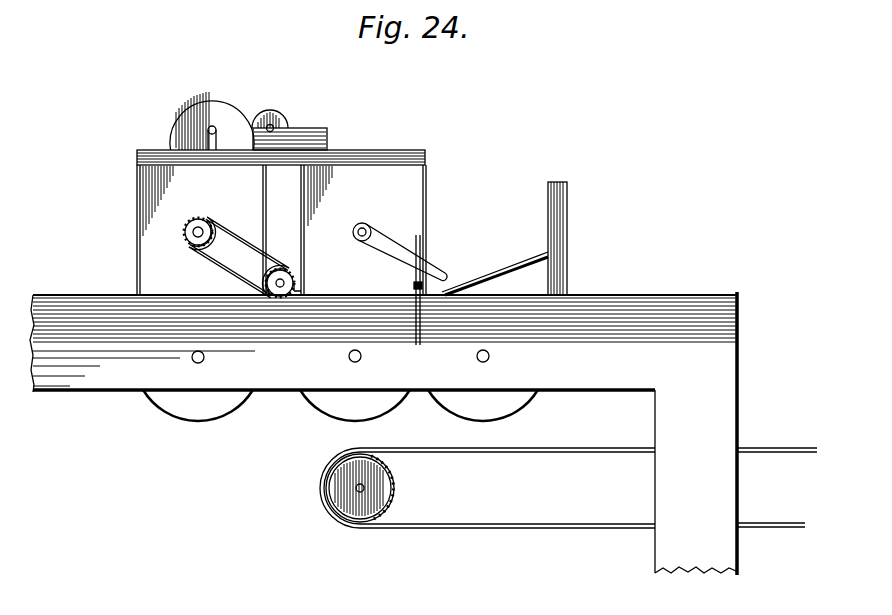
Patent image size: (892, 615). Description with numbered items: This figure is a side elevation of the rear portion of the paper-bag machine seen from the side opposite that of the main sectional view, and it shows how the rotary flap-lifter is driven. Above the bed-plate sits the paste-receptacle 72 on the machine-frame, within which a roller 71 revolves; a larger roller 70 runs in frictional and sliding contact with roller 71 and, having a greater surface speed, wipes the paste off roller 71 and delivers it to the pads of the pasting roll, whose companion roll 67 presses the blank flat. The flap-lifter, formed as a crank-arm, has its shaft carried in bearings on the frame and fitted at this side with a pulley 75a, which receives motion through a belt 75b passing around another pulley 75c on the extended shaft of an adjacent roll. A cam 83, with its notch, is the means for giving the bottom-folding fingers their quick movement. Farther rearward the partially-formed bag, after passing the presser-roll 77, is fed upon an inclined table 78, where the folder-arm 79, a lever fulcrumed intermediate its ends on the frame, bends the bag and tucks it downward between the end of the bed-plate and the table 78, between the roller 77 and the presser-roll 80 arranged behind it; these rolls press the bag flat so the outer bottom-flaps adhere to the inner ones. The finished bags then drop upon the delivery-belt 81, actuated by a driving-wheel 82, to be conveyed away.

The roller 70 is at (213, 95).
The roller 71 is at (271, 114).
The paste-receptacle 72 is at (328, 137).
The pulley 75a is at (268, 281).
The belt 75b is at (213, 251).
The pulley 75c is at (207, 218).
The cam 83 is at (297, 278).
The folder-arm 79 is at (448, 279).
The inclined table 78 is at (520, 269).
The roll 67 is at (198, 405).
The presser-roll 77 is at (355, 405).
The presser-roll 80 is at (483, 405).
The delivery-belt 81 is at (483, 454).
The driving-wheel 82 is at (338, 489).